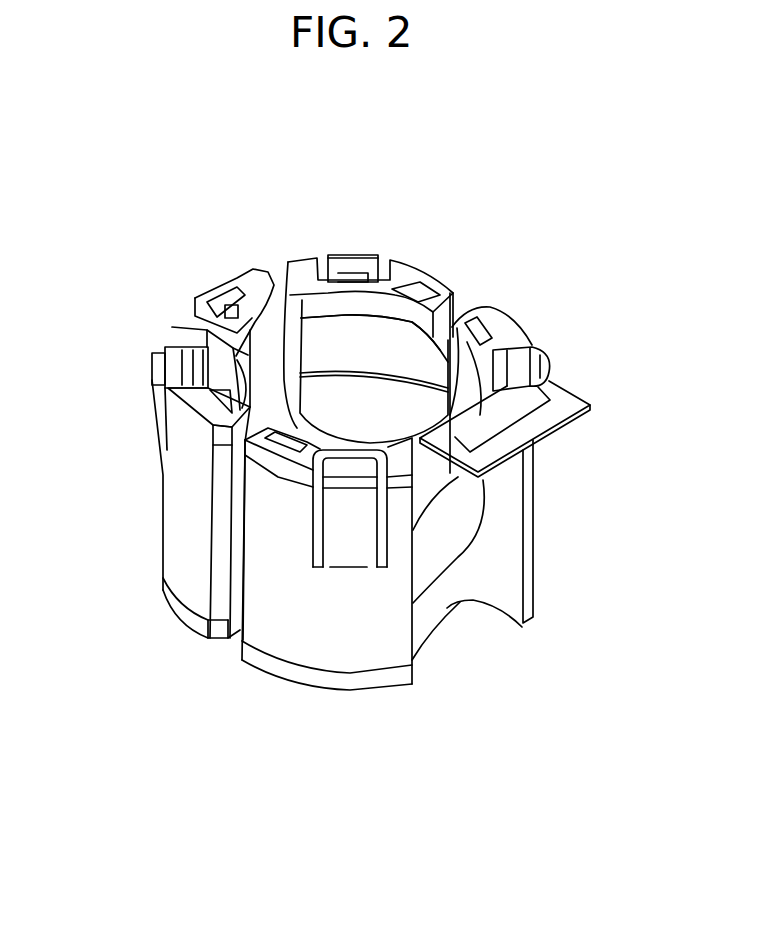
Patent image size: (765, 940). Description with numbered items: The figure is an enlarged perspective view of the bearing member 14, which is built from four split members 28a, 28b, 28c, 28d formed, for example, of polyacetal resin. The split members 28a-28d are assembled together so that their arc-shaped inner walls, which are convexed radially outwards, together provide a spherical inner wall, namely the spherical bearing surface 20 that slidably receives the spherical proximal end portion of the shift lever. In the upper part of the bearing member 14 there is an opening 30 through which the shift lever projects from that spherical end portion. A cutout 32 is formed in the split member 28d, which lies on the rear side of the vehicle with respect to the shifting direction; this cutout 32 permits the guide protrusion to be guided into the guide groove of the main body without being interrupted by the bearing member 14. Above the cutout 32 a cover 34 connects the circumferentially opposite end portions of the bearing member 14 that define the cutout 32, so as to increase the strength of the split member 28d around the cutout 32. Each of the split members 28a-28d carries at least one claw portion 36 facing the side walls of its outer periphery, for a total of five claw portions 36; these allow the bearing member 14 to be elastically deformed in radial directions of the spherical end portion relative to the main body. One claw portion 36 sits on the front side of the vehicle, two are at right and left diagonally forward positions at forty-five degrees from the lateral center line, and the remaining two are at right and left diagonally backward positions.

The bearing member 14 is at (535, 259).
The spherical bearing surface 20 is at (348, 350).
The split member 28a is at (153, 535).
The split member 28b is at (181, 300).
The split member 28c is at (419, 253).
The split member 28d is at (415, 707).
The opening 30 is at (277, 317).
The cutout 32 is at (517, 630).
The cover 34 is at (568, 407).
The claw portion 36 is at (353, 253).